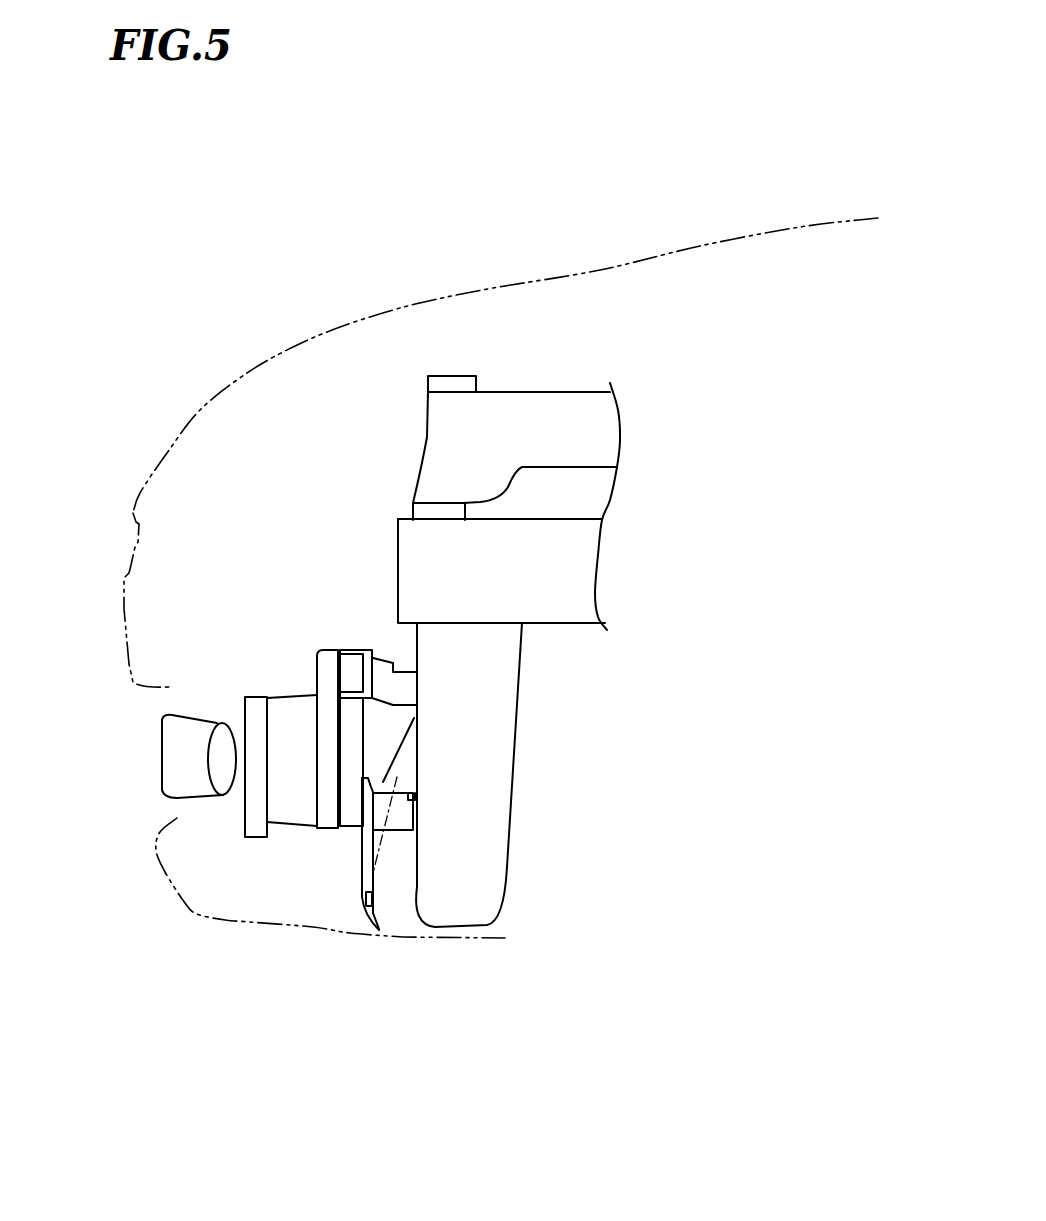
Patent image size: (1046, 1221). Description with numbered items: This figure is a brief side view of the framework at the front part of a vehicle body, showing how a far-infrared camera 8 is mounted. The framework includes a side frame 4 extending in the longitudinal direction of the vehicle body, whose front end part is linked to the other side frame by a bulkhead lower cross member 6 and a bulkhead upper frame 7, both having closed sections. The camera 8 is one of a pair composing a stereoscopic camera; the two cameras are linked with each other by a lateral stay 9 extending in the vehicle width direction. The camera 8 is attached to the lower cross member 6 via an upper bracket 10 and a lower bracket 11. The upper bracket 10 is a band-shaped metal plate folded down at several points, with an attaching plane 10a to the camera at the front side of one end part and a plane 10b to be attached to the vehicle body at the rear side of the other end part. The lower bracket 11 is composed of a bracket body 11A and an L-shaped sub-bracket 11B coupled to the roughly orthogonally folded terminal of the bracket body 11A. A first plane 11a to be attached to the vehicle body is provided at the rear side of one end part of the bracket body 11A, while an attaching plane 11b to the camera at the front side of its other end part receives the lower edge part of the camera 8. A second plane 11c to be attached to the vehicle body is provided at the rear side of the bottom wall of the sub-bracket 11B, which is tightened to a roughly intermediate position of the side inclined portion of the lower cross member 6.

The side frame 4 is at (552, 603).
The bulkhead lower cross member 6 is at (445, 910).
The bulkhead upper frame 7 is at (437, 412).
The far-infrared camera 8 is at (273, 712).
The lateral stay 9 is at (353, 648).
The upper bracket 10 is at (388, 656).
The attaching plane to the camera 10a is at (368, 678).
The plane to be attached to the vehicle body 10b is at (417, 690).
The lower bracket 11 is at (366, 880).
The bracket body 11A is at (363, 861).
The sub-bracket 11B is at (400, 809).
The first plane to be attached to the vehicle body 11a is at (377, 897).
The attaching plane to the camera 11b is at (367, 809).
The second plane to be attached to the vehicle body 11c is at (417, 822).